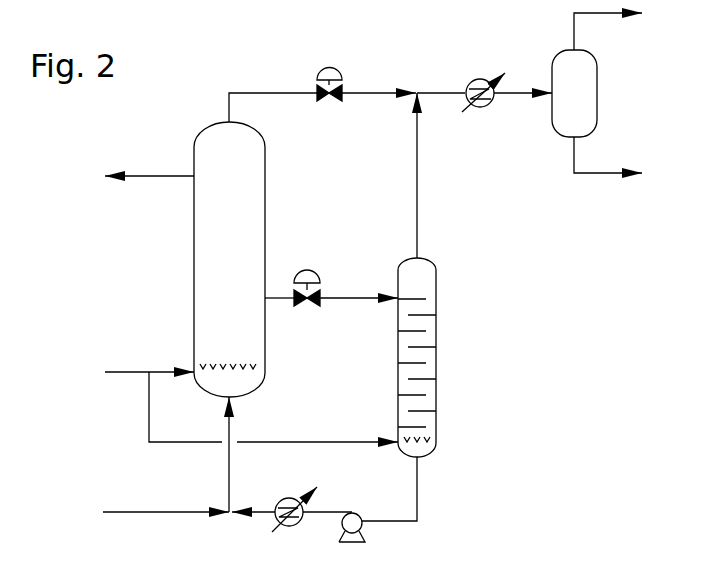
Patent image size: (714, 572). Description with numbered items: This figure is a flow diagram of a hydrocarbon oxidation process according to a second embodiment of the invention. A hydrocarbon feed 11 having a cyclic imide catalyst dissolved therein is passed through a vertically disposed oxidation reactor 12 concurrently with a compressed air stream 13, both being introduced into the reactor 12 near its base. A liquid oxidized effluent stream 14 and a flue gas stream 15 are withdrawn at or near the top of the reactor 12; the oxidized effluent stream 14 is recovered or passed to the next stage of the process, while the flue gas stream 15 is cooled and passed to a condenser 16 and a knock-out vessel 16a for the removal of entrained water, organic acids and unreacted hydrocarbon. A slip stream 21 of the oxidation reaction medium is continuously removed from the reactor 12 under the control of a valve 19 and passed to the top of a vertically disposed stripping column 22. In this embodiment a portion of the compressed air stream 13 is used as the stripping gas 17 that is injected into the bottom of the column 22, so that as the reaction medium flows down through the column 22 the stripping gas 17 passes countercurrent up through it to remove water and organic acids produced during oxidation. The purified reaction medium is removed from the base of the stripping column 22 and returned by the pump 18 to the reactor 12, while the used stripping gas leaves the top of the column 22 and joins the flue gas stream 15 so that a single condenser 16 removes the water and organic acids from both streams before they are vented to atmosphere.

The hydrocarbon feed 11 is at (148, 514).
The oxidation reactor 12 is at (265, 215).
The compressed air stream 13 is at (128, 374).
The liquid oxidized effluent stream 14 is at (150, 178).
The flue gas stream 15 is at (247, 90).
The condenser 16 is at (480, 76).
The knock-out vessel 16a is at (597, 82).
The stripping gas 17 is at (340, 440).
The pump 18 is at (355, 512).
The valve 19 is at (307, 305).
The slip stream 21 is at (363, 293).
The stripping column 22 is at (436, 355).